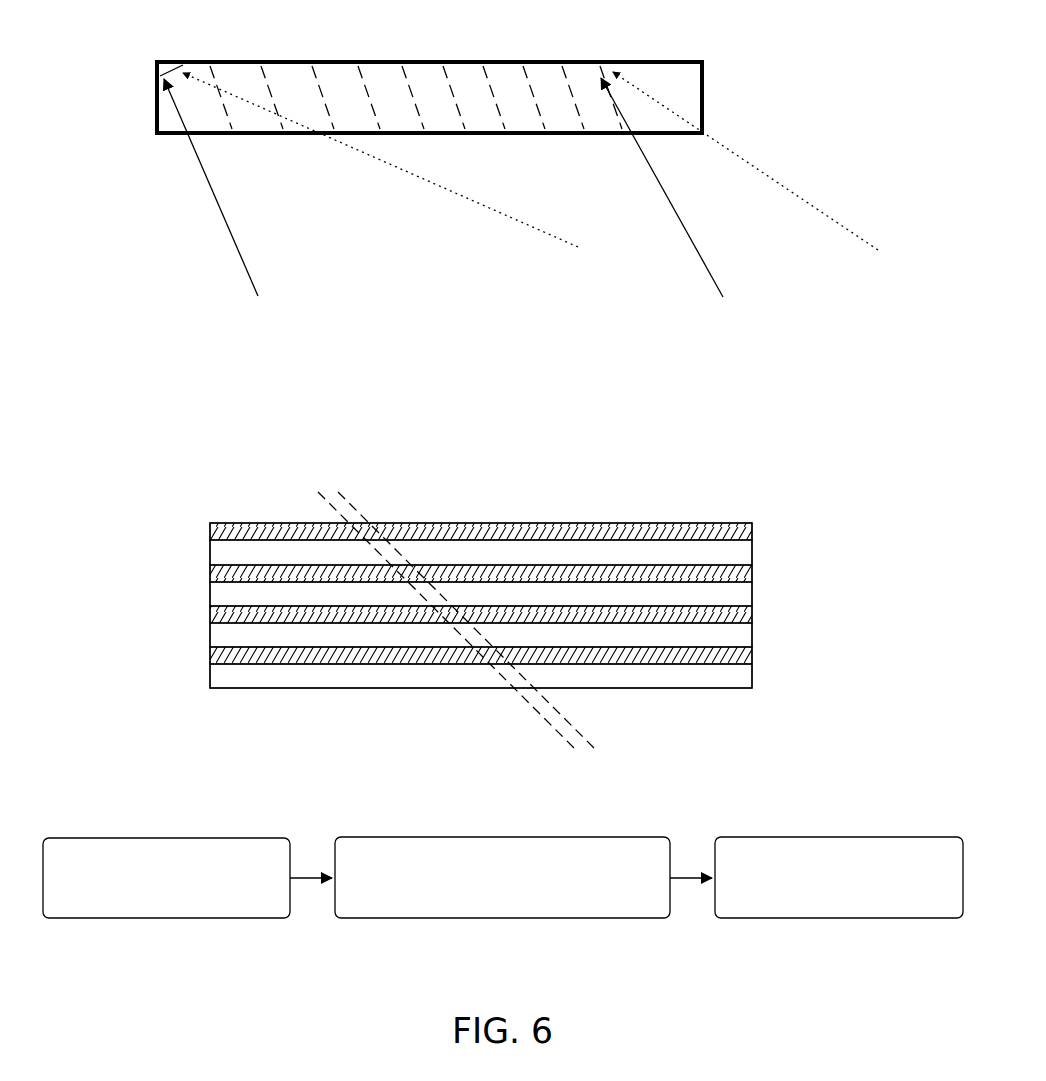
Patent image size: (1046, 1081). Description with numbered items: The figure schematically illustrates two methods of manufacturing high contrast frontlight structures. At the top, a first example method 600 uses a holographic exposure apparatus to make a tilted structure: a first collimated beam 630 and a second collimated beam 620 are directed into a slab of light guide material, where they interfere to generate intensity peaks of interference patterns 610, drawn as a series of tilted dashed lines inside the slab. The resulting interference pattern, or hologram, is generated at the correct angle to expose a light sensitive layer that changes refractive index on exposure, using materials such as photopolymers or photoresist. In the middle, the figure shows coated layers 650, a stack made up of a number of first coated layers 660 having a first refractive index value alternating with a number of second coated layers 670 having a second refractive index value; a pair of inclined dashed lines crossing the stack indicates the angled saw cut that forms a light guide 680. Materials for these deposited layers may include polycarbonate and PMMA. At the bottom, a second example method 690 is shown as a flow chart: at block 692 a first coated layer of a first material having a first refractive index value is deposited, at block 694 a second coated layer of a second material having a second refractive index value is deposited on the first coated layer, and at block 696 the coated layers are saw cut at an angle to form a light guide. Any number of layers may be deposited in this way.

The first example method 600 is at (763, 51).
The intensity peaks of interference patterns 610 is at (383, 88).
The second collimated beam 620 is at (732, 152).
The first collimated beam 630 is at (232, 230).
The coated layers 650 is at (769, 439).
The first coated layers 660 is at (752, 531).
The second coated layers 670 is at (752, 552).
The light guide 680 is at (359, 499).
The second example method 690 is at (108, 811).
The block 692 is at (167, 838).
The block 694 is at (502, 837).
The block 696 is at (840, 837).